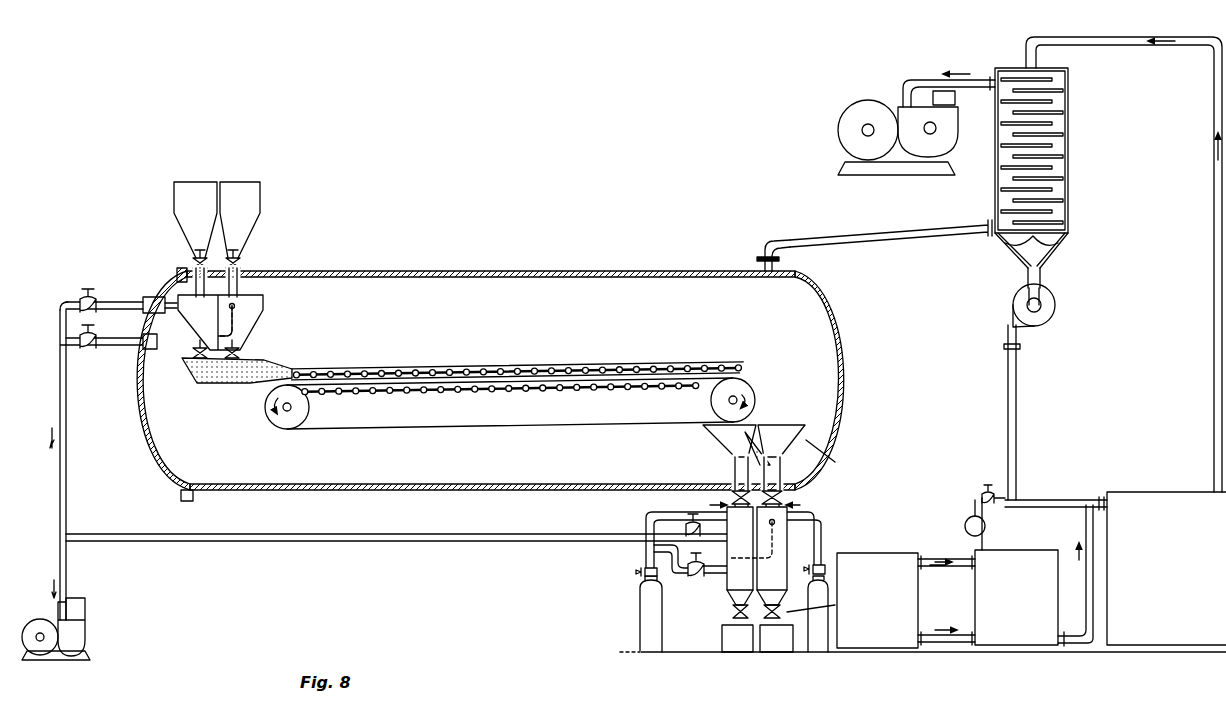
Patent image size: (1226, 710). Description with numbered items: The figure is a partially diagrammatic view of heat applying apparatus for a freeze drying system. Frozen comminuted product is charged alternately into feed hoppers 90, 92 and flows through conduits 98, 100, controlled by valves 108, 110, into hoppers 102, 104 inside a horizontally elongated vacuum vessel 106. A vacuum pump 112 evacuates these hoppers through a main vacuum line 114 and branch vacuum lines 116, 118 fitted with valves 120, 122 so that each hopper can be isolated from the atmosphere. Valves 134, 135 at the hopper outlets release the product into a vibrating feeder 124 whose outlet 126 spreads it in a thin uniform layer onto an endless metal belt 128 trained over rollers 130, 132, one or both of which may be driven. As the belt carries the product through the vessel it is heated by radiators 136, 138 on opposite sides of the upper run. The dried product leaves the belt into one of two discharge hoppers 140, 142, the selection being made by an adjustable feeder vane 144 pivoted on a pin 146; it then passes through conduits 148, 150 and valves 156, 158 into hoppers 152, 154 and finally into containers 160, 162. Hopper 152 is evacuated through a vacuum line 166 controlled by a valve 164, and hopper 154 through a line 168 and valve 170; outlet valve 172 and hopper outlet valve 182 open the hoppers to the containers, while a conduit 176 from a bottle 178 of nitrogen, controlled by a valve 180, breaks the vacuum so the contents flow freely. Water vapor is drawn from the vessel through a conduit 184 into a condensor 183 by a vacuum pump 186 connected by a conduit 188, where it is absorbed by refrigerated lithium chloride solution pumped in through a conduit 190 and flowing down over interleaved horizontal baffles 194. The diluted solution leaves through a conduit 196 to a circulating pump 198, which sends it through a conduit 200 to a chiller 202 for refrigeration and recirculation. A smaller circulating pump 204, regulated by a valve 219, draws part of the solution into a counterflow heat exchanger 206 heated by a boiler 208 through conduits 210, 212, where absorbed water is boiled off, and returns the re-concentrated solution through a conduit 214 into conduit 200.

The feed hopper 90 is at (176, 210).
The feed hopper 92 is at (258, 212).
The conduit 98 is at (176, 280).
The conduit 100 is at (264, 276).
The hopper 102 is at (178, 312).
The hopper 104 is at (256, 316).
The vacuum vessel 106 is at (580, 268).
The valve 108 is at (190, 262).
The valve 110 is at (239, 262).
The vacuum pump 112 is at (50, 613).
The main vacuum line 114 is at (66, 433).
The branch vacuum line 116 is at (108, 300).
The branch vacuum line 118 is at (113, 346).
The valve 120 is at (78, 298).
The valve 122 is at (78, 345).
The vibrating feeder 124 is at (192, 374).
The outlet 126 is at (290, 378).
The endless belt 128 is at (531, 431).
The roller 130 is at (265, 412).
The roller 132 is at (750, 400).
The valve 134 is at (193, 352).
The valve 135 is at (243, 353).
The radiator 136 is at (484, 376).
The radiator 138 is at (423, 400).
The discharge hopper 140 is at (712, 446).
The discharge hopper 142 is at (810, 426).
The feeder vane 144 is at (755, 430).
The pin 146 is at (834, 455).
The conduit 148 is at (733, 472).
The conduit 150 is at (784, 482).
The hopper 152 is at (724, 590).
The hopper 154 is at (790, 556).
The valve 156 is at (730, 498).
The valve 158 is at (787, 498).
The container 160 is at (737, 654).
The container 162 is at (774, 654).
The valve 164 is at (686, 526).
The vacuum line 166 is at (348, 542).
The line 168 is at (656, 548).
The valve 170 is at (712, 577).
The valve 172 is at (730, 617).
The conduit 176 is at (646, 530).
The bottle 178 is at (640, 620).
The valve 180 is at (640, 574).
The hopper outlet valve 182 is at (829, 614).
The condensor 183 is at (1068, 181).
The conduit 184 is at (872, 236).
The vacuum pump 186 is at (884, 170).
The conduit 188 is at (902, 84).
The conduit 190 is at (1212, 328).
The horizontal baffles 194 is at (1066, 112).
The conduit 196 is at (1027, 286).
The circulating pump 198 is at (1050, 301).
The conduit 200 is at (1017, 384).
The chiller 202 is at (1152, 494).
The circulating pump 204 is at (985, 526).
The heat exchanger 206 is at (980, 608).
The boiler 208 is at (903, 556).
The conduit 210 is at (950, 645).
The conduit 212 is at (956, 558).
The conduit 214 is at (1094, 532).
The valve 219 is at (983, 488).